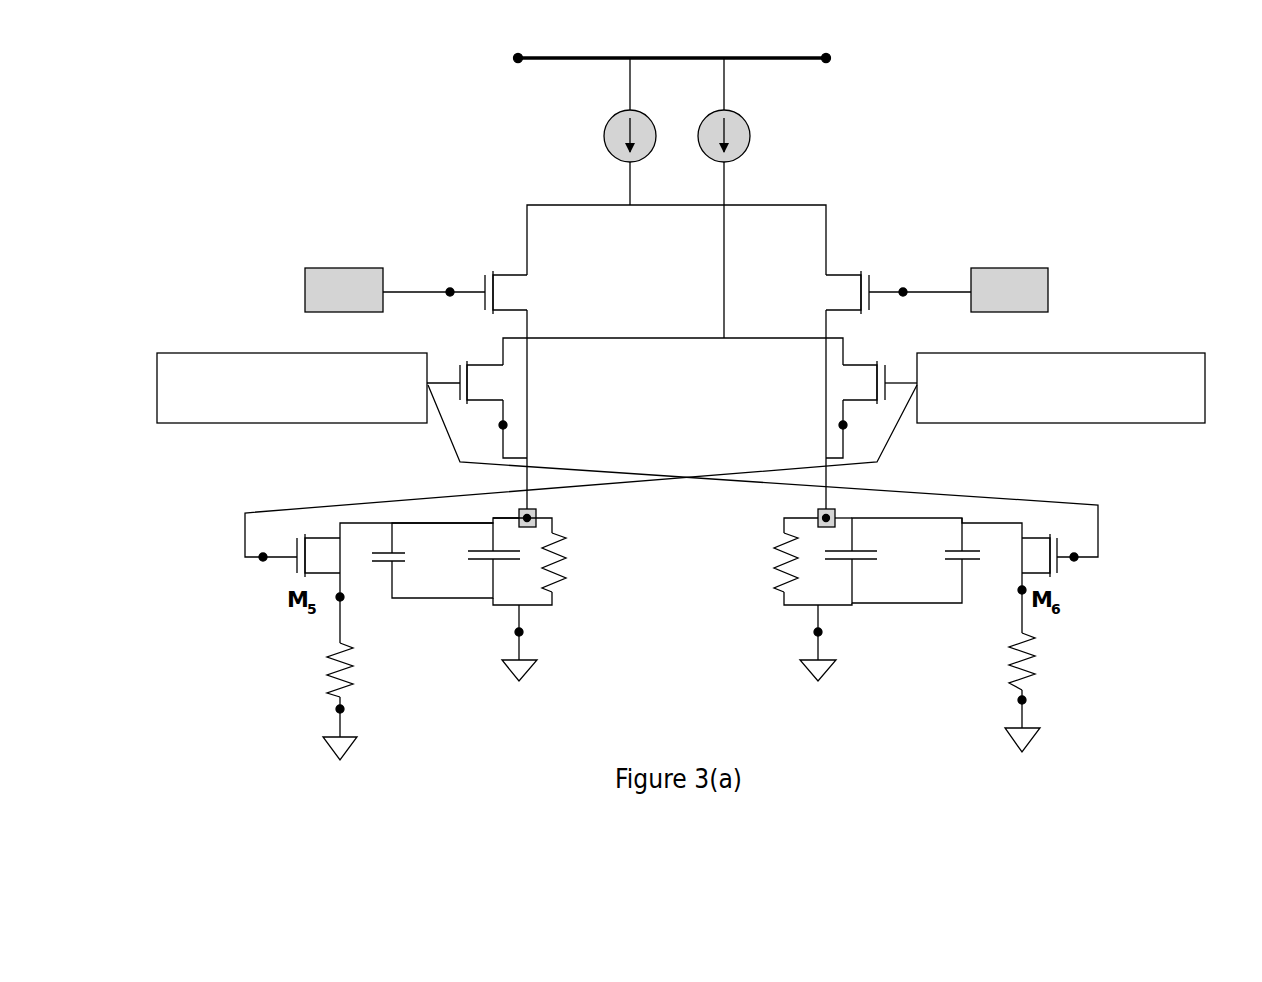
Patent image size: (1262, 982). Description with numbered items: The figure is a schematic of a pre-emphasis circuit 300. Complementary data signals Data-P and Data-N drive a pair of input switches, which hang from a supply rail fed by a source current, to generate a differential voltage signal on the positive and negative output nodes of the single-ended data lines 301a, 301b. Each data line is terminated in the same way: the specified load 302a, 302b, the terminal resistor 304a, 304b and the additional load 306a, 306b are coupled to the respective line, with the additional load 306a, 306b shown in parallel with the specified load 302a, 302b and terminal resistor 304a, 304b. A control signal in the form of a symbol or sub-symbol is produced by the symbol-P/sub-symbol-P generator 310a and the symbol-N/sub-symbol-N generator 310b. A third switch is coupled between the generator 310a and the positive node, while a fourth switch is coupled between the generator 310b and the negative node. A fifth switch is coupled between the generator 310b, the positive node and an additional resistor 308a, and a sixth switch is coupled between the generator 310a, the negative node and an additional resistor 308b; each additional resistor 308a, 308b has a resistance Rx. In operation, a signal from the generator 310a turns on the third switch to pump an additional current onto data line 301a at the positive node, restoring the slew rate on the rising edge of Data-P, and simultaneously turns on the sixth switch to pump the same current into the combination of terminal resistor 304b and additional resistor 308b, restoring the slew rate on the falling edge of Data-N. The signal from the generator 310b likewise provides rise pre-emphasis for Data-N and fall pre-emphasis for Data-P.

The pre-emphasis circuit 300 is at (290, 144).
The single-ended data line 301a is at (535, 403).
The single-ended data line 301b is at (822, 405).
The specified load 302a is at (483, 561).
The specified load 302b is at (862, 561).
The terminal resistor 304a is at (570, 577).
The terminal resistor 304b is at (778, 577).
The additional load 306a is at (398, 561).
The additional load 306b is at (963, 561).
The additional resistor 308a is at (328, 663).
The additional resistor 308b is at (1050, 662).
The symbol-P/sub-symbol-P signal generator 310a is at (188, 423).
The symbol-N/sub-symbol-N signal generator 310b is at (1153, 423).